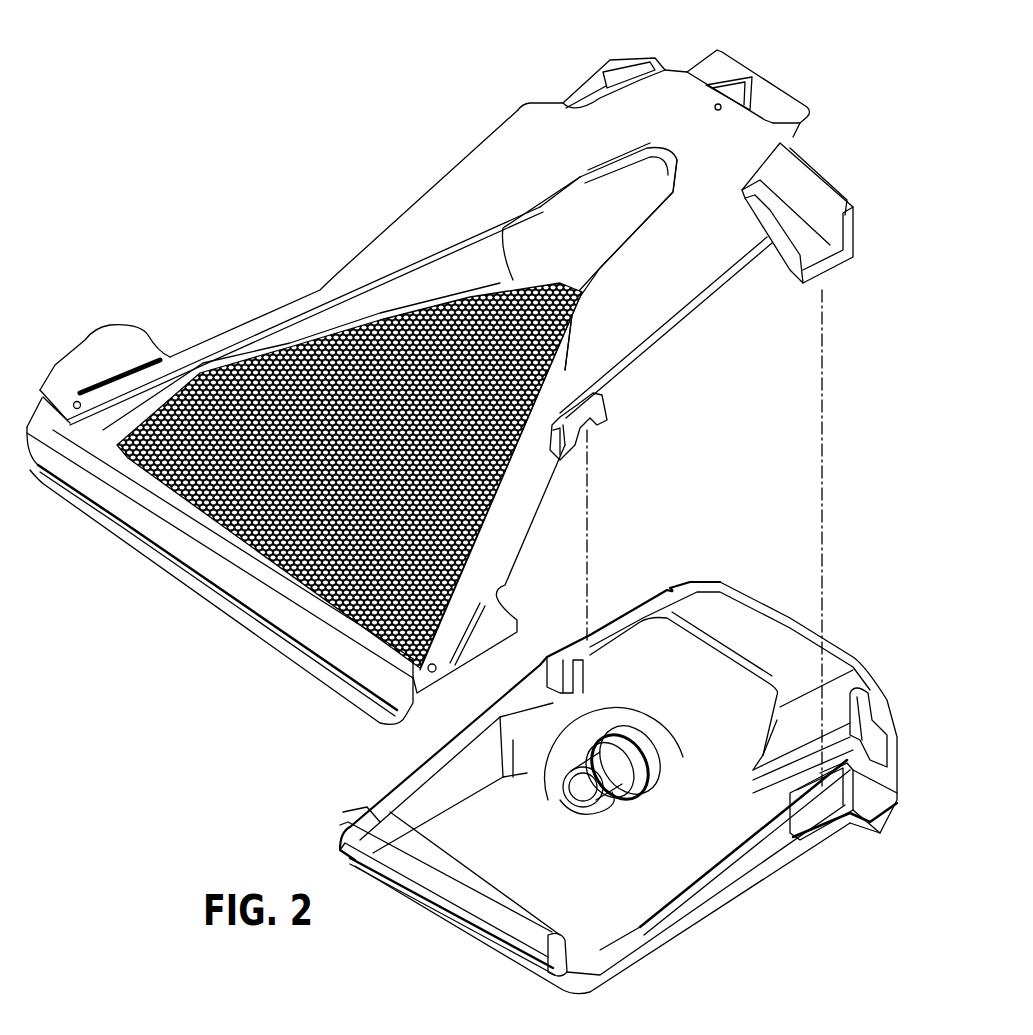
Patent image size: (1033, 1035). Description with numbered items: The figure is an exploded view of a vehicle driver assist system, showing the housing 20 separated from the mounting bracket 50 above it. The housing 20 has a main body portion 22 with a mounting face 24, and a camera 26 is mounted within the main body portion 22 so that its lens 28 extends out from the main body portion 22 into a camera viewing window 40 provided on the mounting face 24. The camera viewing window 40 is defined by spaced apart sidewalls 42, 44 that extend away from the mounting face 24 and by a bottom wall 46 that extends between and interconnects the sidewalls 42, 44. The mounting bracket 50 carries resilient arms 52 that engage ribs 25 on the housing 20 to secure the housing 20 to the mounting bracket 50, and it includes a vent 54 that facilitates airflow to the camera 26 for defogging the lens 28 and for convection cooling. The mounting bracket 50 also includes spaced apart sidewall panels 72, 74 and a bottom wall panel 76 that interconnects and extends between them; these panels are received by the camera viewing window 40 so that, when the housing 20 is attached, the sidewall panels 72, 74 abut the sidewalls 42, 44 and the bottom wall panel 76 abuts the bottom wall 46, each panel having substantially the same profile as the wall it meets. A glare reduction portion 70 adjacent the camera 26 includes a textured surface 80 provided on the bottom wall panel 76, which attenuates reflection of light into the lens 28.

The housing 20 is at (616, 774).
The main body portion 22 is at (882, 787).
The mounting face 24 is at (730, 723).
The ribs 25 is at (820, 773).
The camera 26 is at (625, 808).
The lens 28 is at (590, 787).
The camera viewing window 40 is at (618, 725).
The sidewall 42 is at (470, 780).
The sidewall 44 is at (650, 857).
The bottom wall 46 is at (533, 850).
The mounting bracket 50 is at (442, 370).
The resilient arms 52 is at (607, 82).
The vent 54 is at (133, 445).
The glare reduction portion 70 is at (363, 280).
The sidewall panel 72 is at (480, 258).
The sidewall panel 74 is at (528, 405).
The bottom wall panel 76 is at (177, 480).
The textured surface 80 is at (260, 385).